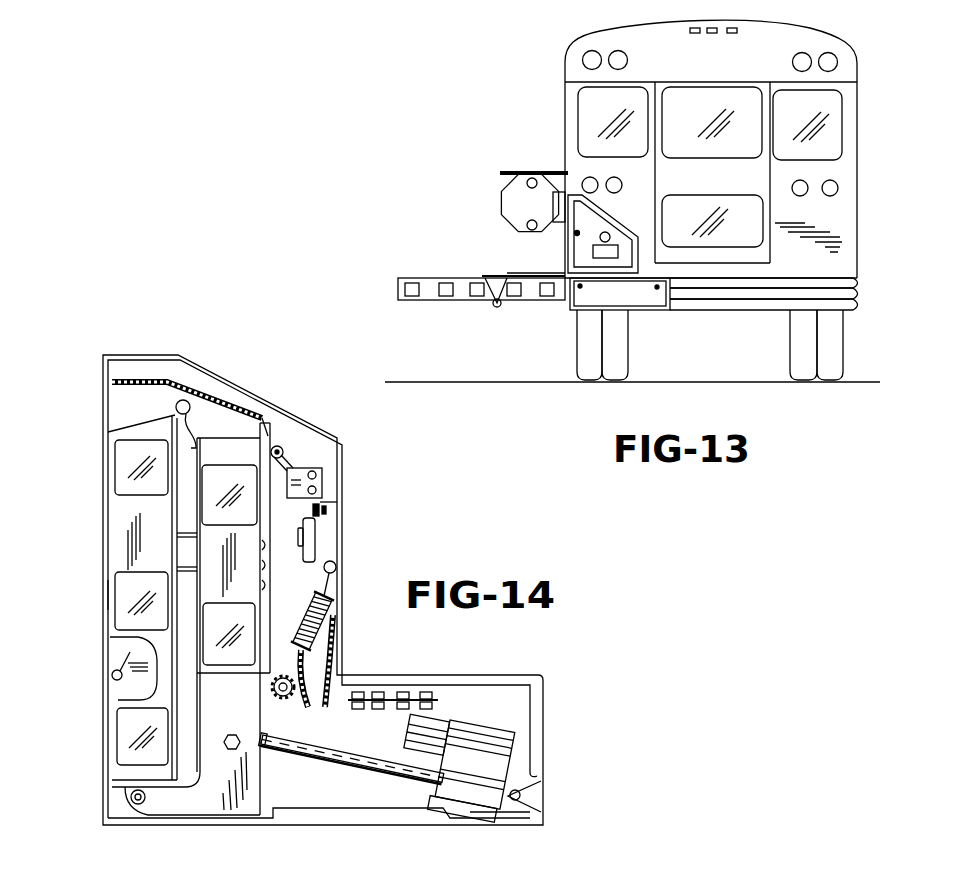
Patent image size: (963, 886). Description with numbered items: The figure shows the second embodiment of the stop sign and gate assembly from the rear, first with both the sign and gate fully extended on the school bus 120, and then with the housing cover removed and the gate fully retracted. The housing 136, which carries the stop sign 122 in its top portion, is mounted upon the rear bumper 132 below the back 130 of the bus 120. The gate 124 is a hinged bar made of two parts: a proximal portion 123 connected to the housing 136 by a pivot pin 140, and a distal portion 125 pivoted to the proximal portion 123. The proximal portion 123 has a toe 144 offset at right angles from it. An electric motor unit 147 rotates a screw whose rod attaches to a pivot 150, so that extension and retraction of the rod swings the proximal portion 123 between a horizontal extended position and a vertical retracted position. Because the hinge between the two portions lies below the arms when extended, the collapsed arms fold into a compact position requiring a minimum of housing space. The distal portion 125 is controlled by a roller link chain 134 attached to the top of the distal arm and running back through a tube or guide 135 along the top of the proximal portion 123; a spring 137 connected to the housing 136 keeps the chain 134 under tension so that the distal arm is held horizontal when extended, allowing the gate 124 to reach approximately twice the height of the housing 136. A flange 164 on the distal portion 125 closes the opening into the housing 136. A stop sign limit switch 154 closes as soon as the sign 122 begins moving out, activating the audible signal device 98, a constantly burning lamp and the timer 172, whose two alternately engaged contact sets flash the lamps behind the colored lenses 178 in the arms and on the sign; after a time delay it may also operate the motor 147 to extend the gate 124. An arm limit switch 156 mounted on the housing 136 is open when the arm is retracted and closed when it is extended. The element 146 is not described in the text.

In FIG. 14, the audible signal device 98 is at (306, 546).
In FIG. 13, the school bus 120 is at (798, 18).
In FIG. 13, the stop sign 122 is at (499, 201).
In FIG. 14, the proximal portion 123 is at (258, 602).
In FIG. 13, the gate 124 is at (462, 277).
In FIG. 13, the distal portion 125 is at (457, 301).
In FIG. 14, the distal portion 125 is at (170, 530).
In FIG. 13, the back 130 is at (742, 74).
In FIG. 13, the rear bumper 132 is at (763, 304).
In FIG. 14, the roller link chain 134 is at (147, 382).
In FIG. 14, the guide 135 is at (272, 435).
In FIG. 13, the housing 136 is at (632, 298).
In FIG. 14, the housing 136 is at (543, 703).
In FIG. 14, the spring 137 is at (335, 604).
In FIG. 14, the pivot pin 140 is at (143, 806).
In FIG. 14, the toe 144 is at (190, 800).
In FIG. 14, the drive rod 146 is at (340, 786).
In FIG. 14, the electric motor unit 147 is at (465, 805).
In FIG. 14, the pivot 150 is at (233, 735).
In FIG. 14, the limit switch 154 is at (110, 653).
In FIG. 14, the arm limit switch 156 is at (320, 467).
In FIG. 14, the flange 164 is at (103, 491).
In FIG. 14, the timer 172 is at (424, 693).
In FIG. 14, the colored lenses 178 is at (118, 606).